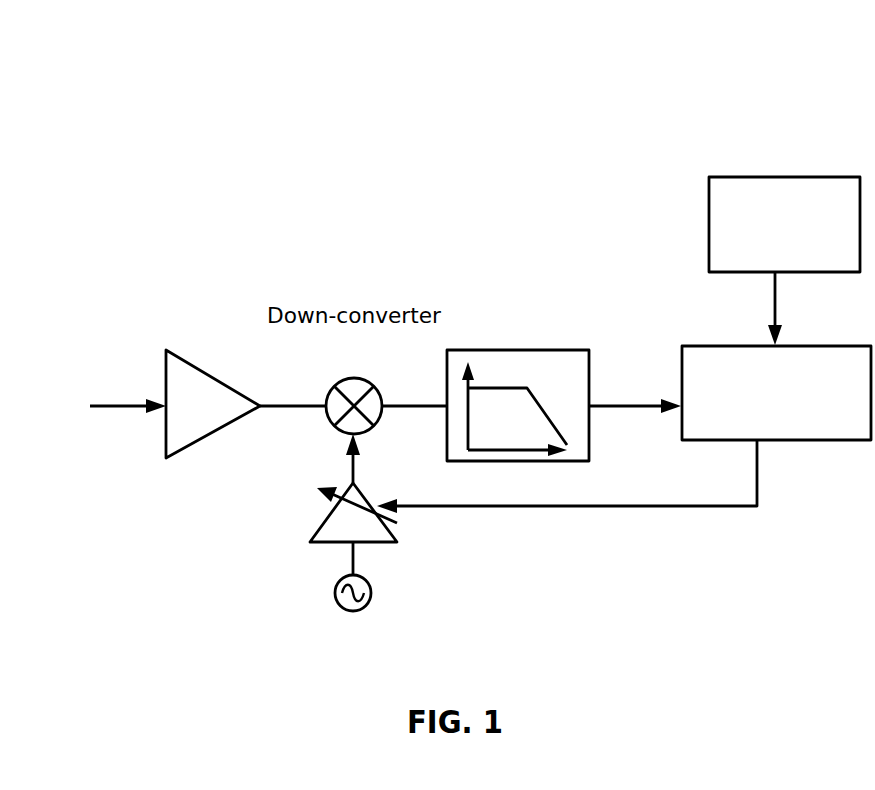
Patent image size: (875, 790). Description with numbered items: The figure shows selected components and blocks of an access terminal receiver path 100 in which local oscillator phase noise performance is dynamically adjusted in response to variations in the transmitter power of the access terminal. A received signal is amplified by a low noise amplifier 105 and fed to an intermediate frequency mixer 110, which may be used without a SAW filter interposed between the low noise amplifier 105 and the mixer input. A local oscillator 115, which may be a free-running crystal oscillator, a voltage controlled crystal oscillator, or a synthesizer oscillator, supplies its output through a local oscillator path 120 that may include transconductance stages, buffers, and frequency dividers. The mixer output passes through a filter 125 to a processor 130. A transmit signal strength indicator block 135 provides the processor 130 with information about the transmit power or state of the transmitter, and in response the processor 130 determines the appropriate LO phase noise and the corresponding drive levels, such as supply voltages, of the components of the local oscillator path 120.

The receiver path 100 is at (365, 96).
The low noise amplifier 105 is at (197, 368).
The intermediate frequency mixer 110 is at (354, 378).
The local oscillator 115 is at (364, 578).
The local oscillator path 120 is at (322, 524).
The filter 125 is at (548, 350).
The processor 130 is at (803, 346).
The transmit signal strength indicator block 135 is at (766, 177).